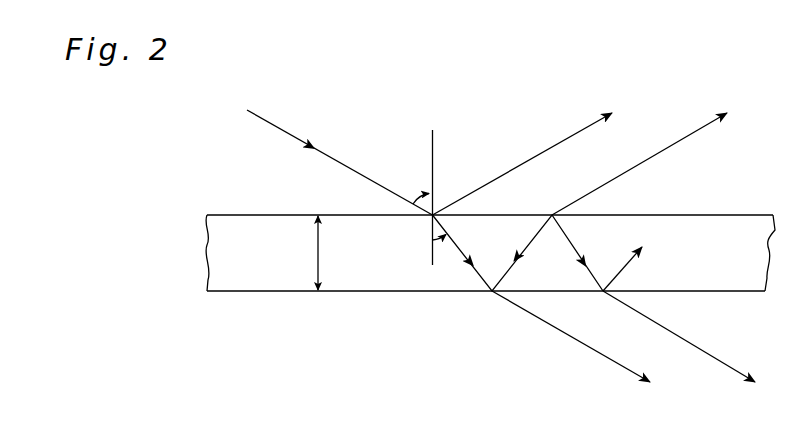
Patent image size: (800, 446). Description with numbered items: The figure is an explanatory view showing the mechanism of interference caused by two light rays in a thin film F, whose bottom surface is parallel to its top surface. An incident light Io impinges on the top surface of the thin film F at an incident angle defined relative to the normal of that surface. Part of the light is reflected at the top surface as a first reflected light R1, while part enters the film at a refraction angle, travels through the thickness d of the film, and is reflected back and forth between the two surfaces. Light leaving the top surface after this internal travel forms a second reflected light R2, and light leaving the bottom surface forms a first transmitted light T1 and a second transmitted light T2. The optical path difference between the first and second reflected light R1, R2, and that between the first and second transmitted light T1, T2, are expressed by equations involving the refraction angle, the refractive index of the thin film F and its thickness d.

The thin film F is at (726, 216).
The incident light Io is at (333, 151).
The first reflected light R1 is at (528, 152).
The second reflected light R2 is at (647, 152).
The first transmitted light T1 is at (574, 350).
The second transmitted light T2 is at (683, 351).
The thickness d is at (316, 253).